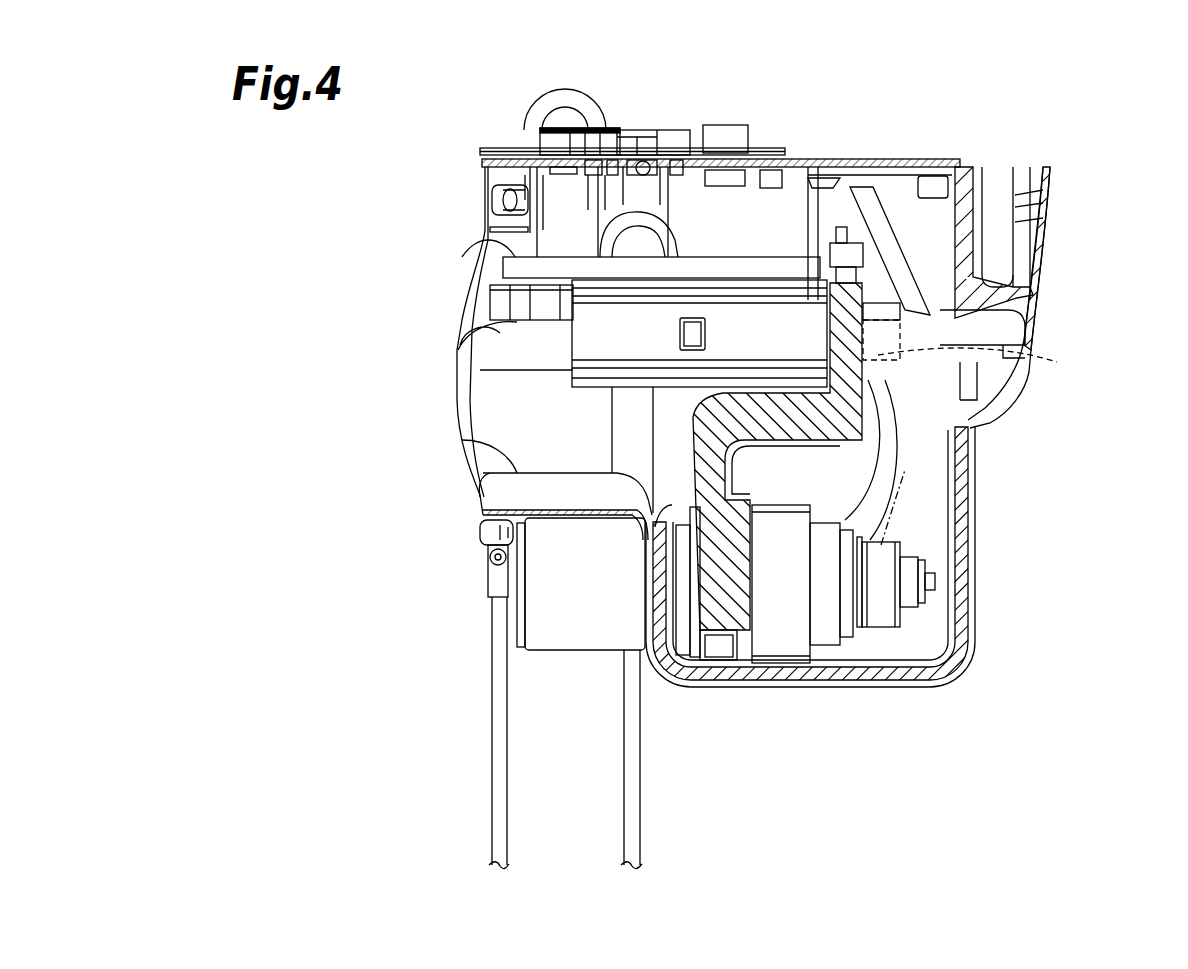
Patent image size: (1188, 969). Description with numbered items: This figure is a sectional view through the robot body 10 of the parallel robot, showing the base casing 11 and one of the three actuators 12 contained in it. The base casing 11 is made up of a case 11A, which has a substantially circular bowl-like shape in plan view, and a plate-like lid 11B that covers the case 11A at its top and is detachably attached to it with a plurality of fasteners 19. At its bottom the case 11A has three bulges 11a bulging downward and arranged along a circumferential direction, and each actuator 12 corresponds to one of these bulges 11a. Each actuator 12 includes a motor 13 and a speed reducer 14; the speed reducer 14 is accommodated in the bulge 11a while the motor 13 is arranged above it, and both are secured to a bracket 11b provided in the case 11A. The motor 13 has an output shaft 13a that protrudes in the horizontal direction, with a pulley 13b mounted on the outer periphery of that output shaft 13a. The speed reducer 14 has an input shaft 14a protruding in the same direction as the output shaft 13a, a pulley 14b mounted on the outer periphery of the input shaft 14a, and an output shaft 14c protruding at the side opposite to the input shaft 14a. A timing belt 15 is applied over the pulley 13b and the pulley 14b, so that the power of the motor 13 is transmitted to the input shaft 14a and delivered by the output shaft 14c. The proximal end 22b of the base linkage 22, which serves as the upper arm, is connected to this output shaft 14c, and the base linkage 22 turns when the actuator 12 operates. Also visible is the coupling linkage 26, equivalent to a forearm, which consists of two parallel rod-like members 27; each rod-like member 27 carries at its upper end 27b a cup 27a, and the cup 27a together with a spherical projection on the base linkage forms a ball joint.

The robot body 10 is at (1068, 316).
The base casing 11 is at (1140, 130).
The case 11A is at (1047, 217).
The lid 11B is at (900, 162).
The bulge 11a is at (822, 690).
The bracket 11b is at (730, 662).
The actuator 12 is at (1062, 418).
The motor 13 is at (905, 425).
The output shaft 13a is at (983, 340).
The pulley 13b is at (1023, 300).
The speed reducer 14 is at (783, 540).
The input shaft 14a is at (912, 605).
The pulley 14b is at (880, 630).
The output shaft 14c is at (686, 698).
The timing belt 15 is at (935, 515).
The fastener 19 is at (592, 92).
The base linkage 22 is at (553, 657).
The proximal end 22b is at (546, 622).
The coupling linkage 26 is at (415, 757).
The rod-like member 27 is at (496, 770).
The cup 27a is at (480, 528).
The upper end 27b is at (492, 580).